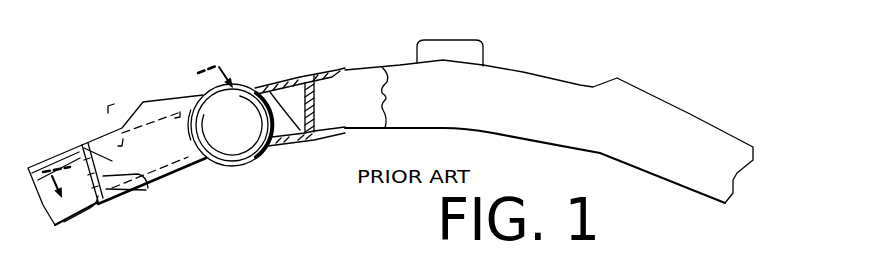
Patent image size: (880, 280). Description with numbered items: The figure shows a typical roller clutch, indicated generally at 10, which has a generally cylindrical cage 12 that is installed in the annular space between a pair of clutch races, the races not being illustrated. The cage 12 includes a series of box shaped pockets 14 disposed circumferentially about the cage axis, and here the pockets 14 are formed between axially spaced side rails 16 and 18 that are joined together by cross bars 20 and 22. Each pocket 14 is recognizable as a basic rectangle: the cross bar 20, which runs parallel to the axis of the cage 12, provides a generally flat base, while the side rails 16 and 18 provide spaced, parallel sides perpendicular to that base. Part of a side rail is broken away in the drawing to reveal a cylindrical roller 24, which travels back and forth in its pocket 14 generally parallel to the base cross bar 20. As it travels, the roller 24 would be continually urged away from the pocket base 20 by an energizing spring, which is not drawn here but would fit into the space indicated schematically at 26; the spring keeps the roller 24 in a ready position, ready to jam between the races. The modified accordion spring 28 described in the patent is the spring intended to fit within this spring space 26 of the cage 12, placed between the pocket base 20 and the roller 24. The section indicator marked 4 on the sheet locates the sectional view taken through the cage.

The roller clutch 10 is at (181, 70).
The cage 12 is at (533, 65).
The pockets 14 is at (163, 110).
The side rail 16 is at (375, 66).
The side rail 18 is at (427, 108).
The cross bar 20 is at (181, 173).
The cross bar 22 is at (301, 100).
The roller 24 is at (248, 128).
The spring space 26 is at (82, 147).
The spring 28 is at (192, 172).
The section line 4- 4 is at (141, 146).